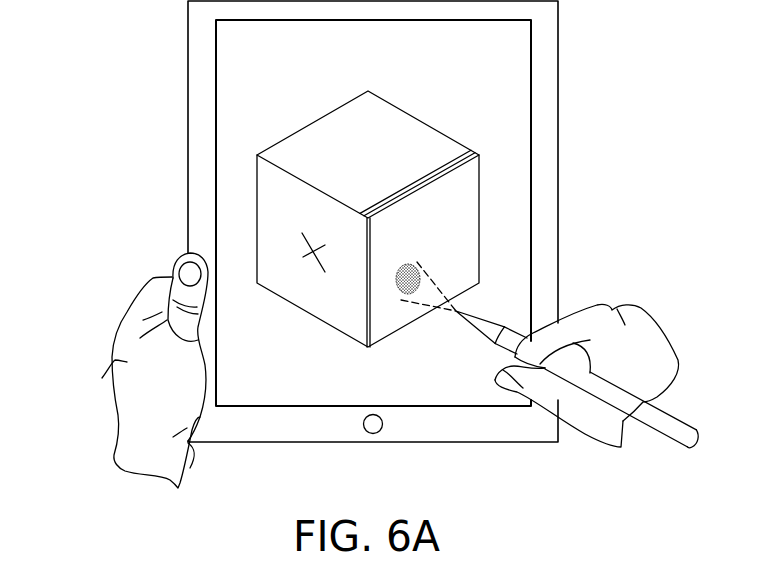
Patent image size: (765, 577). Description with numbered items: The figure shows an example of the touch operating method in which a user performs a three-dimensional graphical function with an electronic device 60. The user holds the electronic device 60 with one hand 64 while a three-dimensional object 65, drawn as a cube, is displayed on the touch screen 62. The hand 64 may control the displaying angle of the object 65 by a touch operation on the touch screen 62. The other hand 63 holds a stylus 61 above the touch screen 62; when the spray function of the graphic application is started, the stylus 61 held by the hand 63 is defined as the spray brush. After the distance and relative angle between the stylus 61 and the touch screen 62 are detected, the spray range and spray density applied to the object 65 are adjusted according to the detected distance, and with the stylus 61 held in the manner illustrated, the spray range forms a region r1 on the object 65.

The electronic device 60 is at (545, 73).
The stylus 61 is at (612, 395).
The touch screen 62 is at (518, 113).
The hand 63 is at (650, 343).
The hand 64 is at (111, 372).
The 3D object 65 is at (404, 128).
The region r1 is at (412, 261).